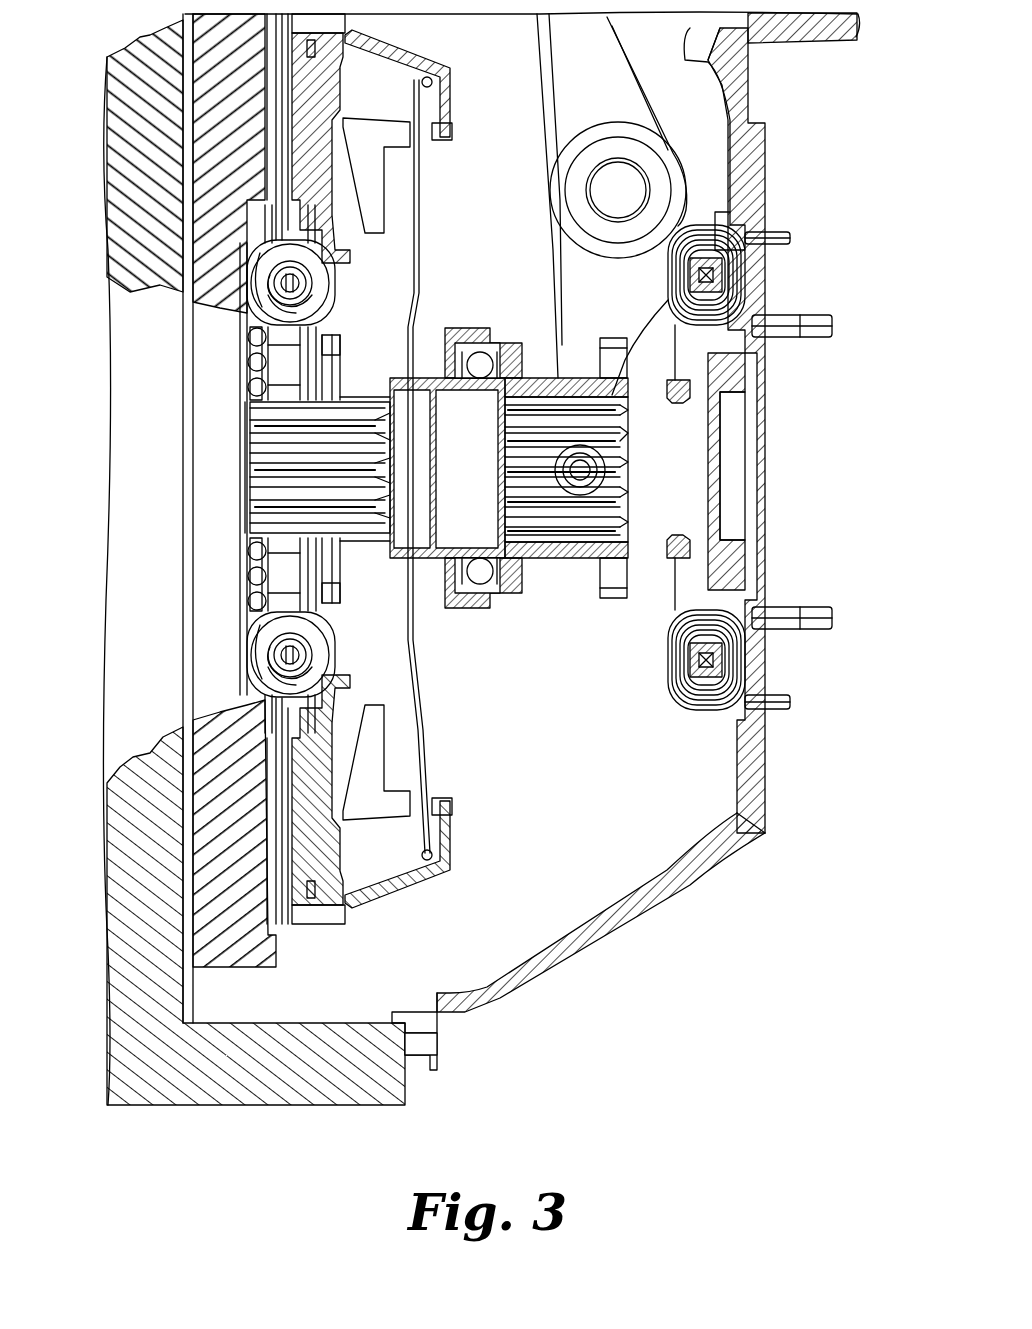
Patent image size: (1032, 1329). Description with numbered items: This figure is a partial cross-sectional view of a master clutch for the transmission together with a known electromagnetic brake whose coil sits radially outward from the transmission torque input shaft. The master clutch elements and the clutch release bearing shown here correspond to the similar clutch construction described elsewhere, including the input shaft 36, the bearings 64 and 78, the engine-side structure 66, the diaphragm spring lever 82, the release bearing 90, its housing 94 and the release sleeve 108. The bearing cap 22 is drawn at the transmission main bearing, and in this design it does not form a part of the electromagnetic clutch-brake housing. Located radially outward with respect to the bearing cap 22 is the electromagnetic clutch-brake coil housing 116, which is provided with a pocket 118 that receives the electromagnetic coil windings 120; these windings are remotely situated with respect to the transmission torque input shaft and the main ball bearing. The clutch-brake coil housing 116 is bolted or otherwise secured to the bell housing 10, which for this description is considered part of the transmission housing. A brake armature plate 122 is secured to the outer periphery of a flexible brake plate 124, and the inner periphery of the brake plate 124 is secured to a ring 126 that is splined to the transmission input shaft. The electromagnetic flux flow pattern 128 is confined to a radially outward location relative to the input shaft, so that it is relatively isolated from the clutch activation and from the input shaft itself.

The bell housing 10 is at (667, 873).
The bearing cap 22 is at (733, 563).
The input shaft 36 is at (287, 400).
The bearing 64 is at (325, 655).
The engine block 66 is at (247, 707).
The bearing 78 is at (323, 153).
The diaphragm spring lever 82 is at (425, 735).
The release bearing 90 is at (487, 356).
The release bearing housing 94 is at (537, 557).
The release sleeve 108 is at (618, 580).
The electromagnetic clutch-brake coil housing 116 is at (743, 250).
The pocket 118 is at (677, 710).
The electromagnetic coil windings 120 is at (733, 282).
The brake armature plate 122 is at (683, 223).
The flexible brake plate 124 is at (608, 483).
The ring 126 is at (680, 407).
The electromagnetic flux flow pattern 128 is at (770, 350).